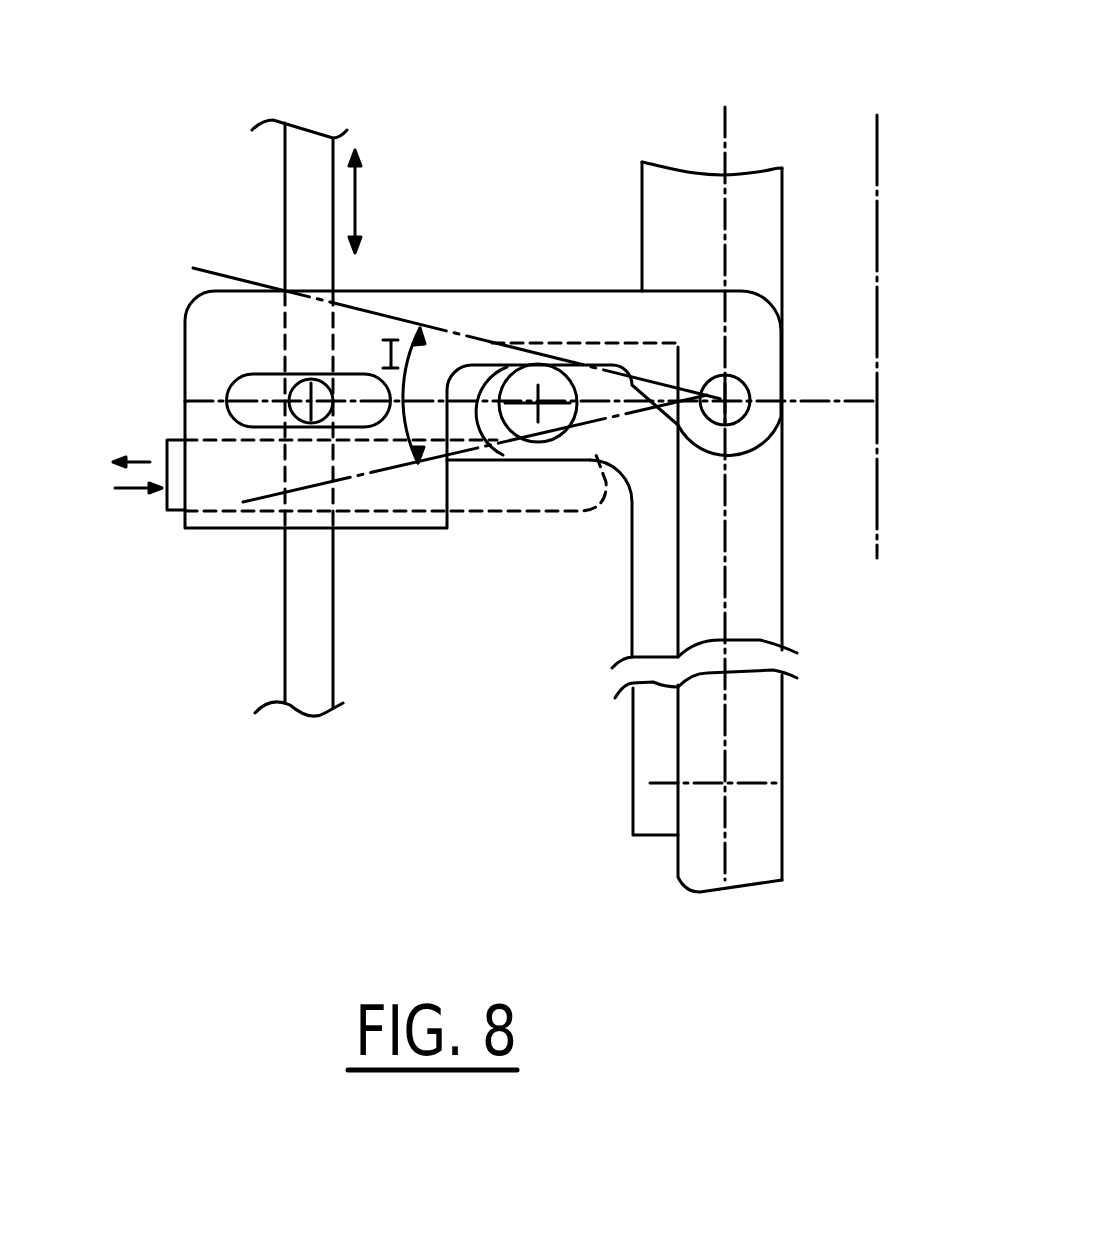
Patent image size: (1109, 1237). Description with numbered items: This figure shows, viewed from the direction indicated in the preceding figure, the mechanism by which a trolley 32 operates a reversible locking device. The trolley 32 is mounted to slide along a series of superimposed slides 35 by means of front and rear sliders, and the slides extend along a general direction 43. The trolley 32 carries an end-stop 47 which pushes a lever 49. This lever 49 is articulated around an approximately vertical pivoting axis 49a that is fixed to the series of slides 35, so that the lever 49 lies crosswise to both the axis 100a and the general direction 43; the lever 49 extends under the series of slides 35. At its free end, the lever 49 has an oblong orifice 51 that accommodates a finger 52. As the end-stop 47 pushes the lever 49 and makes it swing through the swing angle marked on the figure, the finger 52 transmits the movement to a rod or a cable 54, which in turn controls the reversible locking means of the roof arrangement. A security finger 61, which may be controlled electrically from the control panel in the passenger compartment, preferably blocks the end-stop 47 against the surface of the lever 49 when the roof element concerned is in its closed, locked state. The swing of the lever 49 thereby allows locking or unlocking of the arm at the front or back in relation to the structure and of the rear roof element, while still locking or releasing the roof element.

The trolley 32 is at (640, 752).
The series of superimposed slides 35 is at (763, 550).
The general direction of extension of the slides 43 is at (718, 143).
The end-stop 47 is at (534, 426).
The lever 49 is at (503, 298).
The pivoting axis 49a is at (725, 400).
The oblong orifice 51 is at (227, 388).
The finger 52 is at (297, 393).
The rod or cable 54 is at (300, 647).
The security finger 61 is at (472, 503).
The axis 100a is at (870, 150).